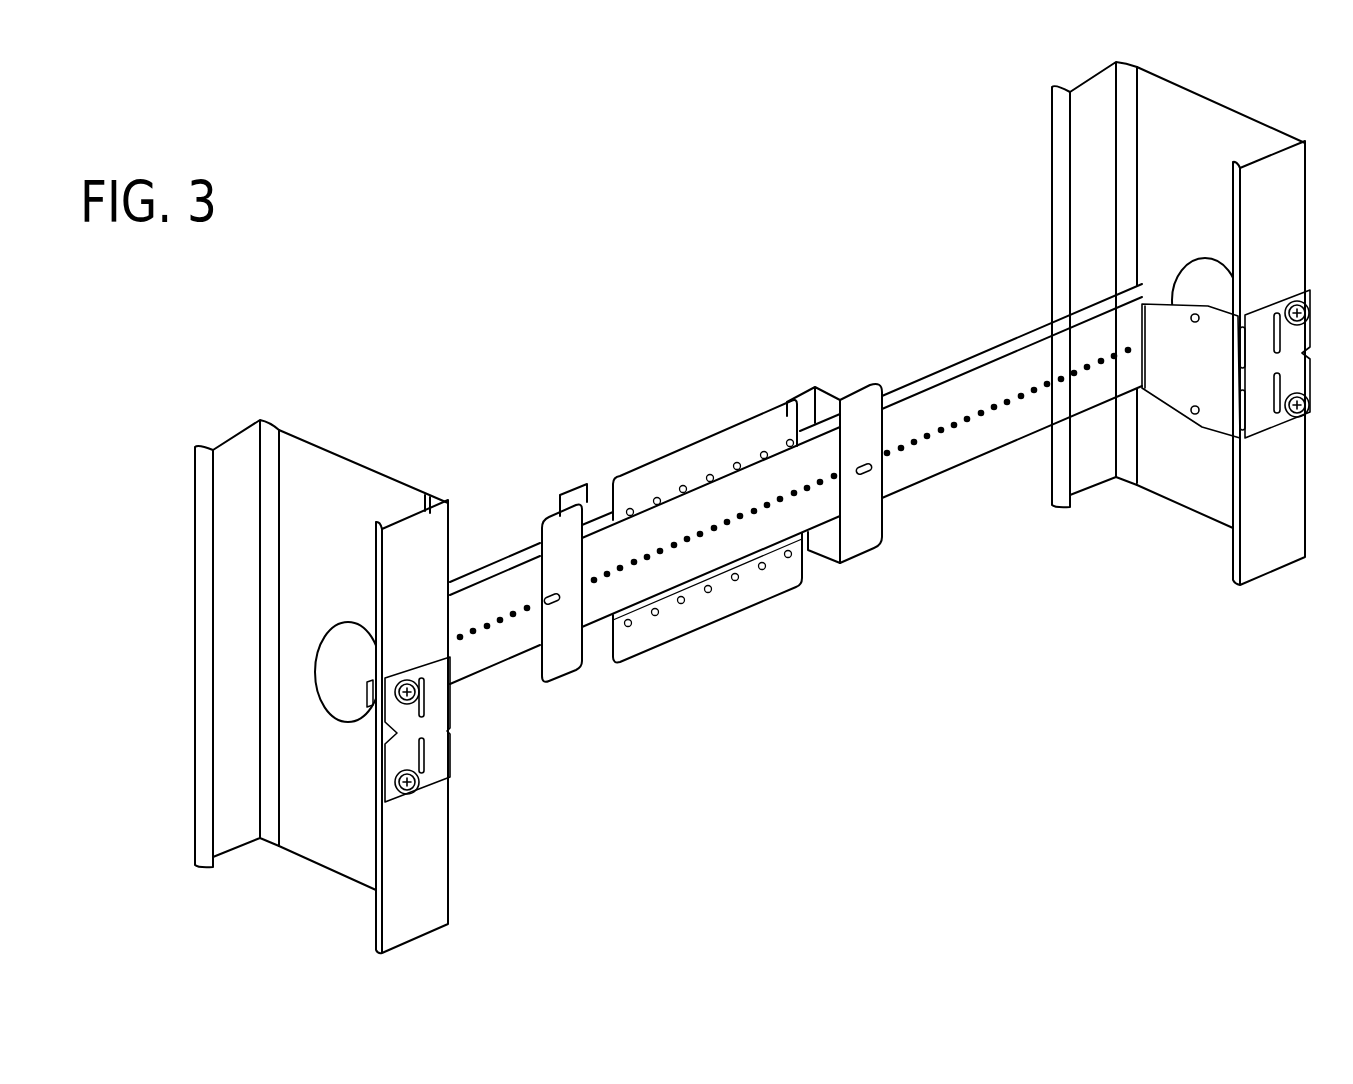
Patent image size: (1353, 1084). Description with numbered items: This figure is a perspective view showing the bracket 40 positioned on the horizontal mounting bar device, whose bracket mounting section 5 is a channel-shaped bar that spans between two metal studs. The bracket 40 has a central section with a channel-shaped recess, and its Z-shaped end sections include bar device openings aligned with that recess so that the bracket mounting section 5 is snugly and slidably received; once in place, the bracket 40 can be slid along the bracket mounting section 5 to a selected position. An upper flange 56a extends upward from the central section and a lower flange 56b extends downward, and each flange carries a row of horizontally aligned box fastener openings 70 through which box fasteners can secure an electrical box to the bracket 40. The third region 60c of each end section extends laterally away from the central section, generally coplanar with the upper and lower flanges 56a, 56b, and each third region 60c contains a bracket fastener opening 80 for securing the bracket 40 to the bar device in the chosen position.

The bracket mounting section 5 is at (977, 457).
The bracket 40 is at (741, 532).
The upper flange 56a is at (745, 437).
The lower flange 56b is at (770, 594).
The third region 60c is at (562, 672).
The box fastener openings 70 is at (735, 464).
The bracket fastener openings 80 is at (867, 465).